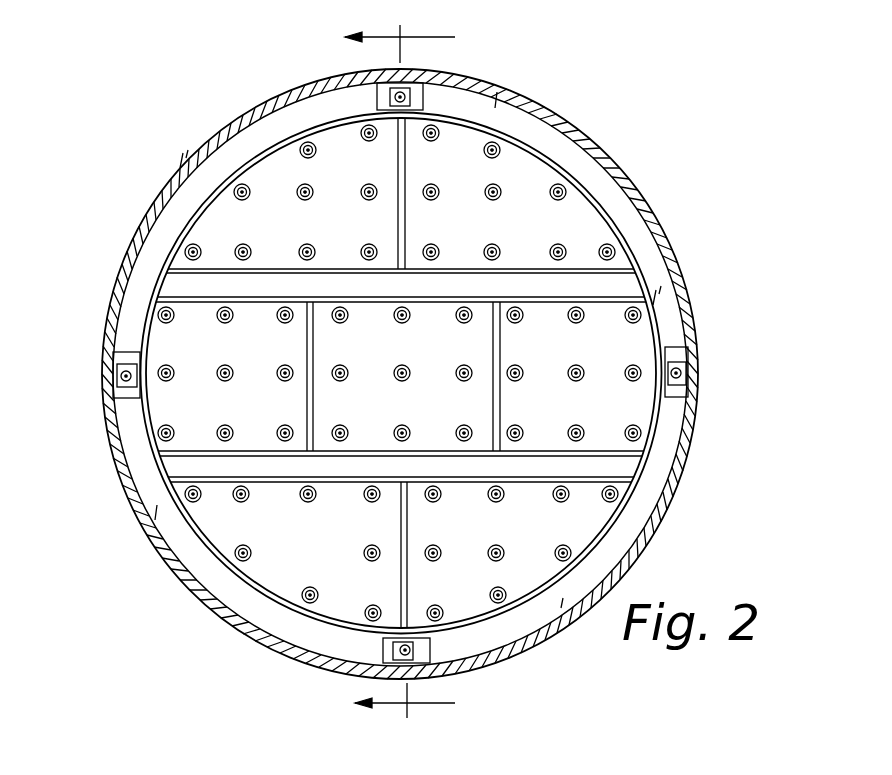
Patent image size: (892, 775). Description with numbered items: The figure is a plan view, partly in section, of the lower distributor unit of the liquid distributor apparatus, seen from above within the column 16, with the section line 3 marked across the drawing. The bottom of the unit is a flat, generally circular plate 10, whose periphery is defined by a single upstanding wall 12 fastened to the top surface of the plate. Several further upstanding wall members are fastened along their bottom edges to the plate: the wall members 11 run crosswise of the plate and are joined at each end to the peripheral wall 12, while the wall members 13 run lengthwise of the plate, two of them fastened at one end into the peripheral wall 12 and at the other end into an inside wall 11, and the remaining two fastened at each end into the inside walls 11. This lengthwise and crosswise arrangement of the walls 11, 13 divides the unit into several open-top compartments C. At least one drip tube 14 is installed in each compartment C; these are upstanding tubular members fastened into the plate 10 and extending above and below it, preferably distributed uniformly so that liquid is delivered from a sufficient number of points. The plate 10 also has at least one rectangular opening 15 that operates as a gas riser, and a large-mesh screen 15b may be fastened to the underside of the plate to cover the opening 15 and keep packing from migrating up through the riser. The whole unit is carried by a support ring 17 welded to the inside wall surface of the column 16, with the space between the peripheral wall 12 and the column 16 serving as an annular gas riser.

The section line 3- 3 is at (382, 374).
The plate 10 is at (533, 185).
The wall members 11 is at (401, 370).
The upstanding wall 12 is at (540, 588).
The wall members 13 is at (398, 219).
The drip tube 14 is at (305, 192).
The rectangular opening 15 is at (578, 267).
The large-mesh screen 15b is at (220, 267).
The column 16 is at (168, 185).
The support ring 17 is at (616, 196).
The compartments C is at (285, 228).